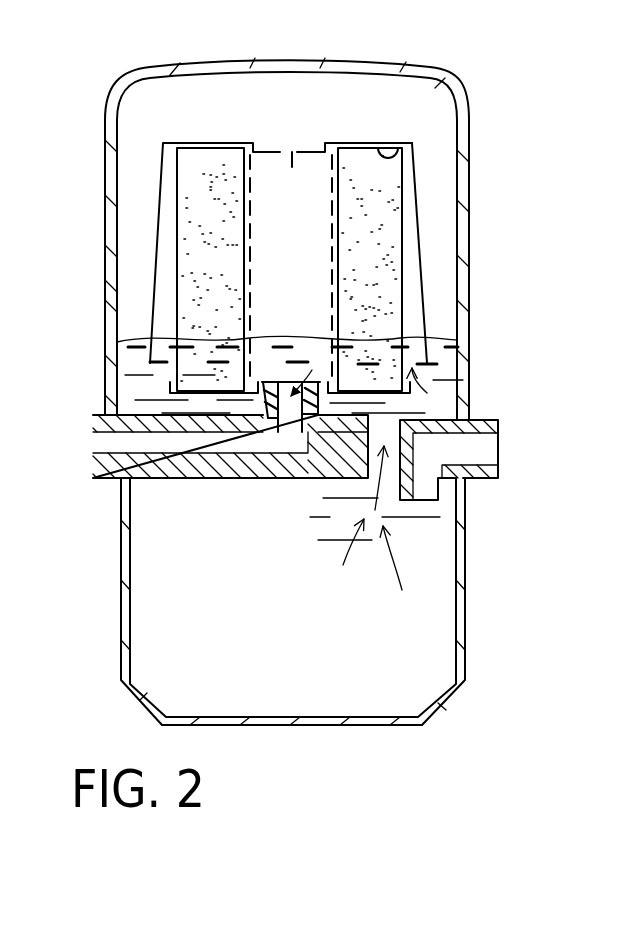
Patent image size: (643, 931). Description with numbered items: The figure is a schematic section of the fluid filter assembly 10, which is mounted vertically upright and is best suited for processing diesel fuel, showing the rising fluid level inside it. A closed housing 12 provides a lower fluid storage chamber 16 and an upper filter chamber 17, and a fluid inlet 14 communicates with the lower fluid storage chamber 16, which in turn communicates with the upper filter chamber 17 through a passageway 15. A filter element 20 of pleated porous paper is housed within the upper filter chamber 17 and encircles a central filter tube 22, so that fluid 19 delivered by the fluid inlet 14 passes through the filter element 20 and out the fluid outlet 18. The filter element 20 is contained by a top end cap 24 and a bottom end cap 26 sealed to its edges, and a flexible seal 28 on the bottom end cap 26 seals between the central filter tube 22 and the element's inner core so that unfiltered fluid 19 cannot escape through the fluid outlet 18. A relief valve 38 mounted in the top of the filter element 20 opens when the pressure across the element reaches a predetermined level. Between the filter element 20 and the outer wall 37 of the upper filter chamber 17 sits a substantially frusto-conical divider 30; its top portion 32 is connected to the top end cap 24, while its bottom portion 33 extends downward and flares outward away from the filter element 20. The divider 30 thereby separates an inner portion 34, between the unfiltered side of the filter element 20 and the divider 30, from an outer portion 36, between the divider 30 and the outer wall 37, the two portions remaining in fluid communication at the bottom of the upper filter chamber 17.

The fluid filter assembly 10 is at (513, 68).
The housing 12 is at (473, 346).
The fluid inlet 14 is at (477, 462).
The passageway 15 is at (388, 432).
The lower fluid storage chamber 16 is at (443, 617).
The upper filter chamber 17 is at (385, 95).
The fluid outlet 18 is at (122, 447).
The fluid 19 is at (452, 346).
The filter element 20 is at (388, 200).
The central filter tube 22 is at (290, 405).
The top end cap 24 is at (392, 167).
The bottom end cap 26 is at (126, 345).
The flexible seal 28 is at (262, 413).
The divider 30 is at (426, 232).
The top portion 32 is at (200, 140).
The bottom portion 33 is at (162, 185).
The inner portion 34 is at (163, 245).
The outer portion 36 is at (126, 272).
The outer wall 37 is at (121, 113).
The relief valve 38 is at (293, 165).